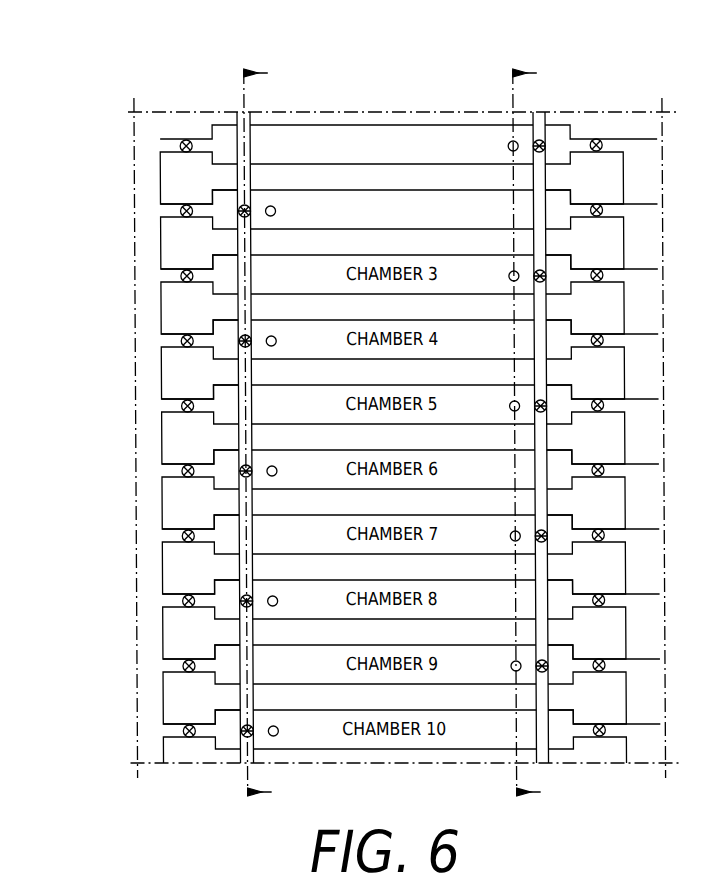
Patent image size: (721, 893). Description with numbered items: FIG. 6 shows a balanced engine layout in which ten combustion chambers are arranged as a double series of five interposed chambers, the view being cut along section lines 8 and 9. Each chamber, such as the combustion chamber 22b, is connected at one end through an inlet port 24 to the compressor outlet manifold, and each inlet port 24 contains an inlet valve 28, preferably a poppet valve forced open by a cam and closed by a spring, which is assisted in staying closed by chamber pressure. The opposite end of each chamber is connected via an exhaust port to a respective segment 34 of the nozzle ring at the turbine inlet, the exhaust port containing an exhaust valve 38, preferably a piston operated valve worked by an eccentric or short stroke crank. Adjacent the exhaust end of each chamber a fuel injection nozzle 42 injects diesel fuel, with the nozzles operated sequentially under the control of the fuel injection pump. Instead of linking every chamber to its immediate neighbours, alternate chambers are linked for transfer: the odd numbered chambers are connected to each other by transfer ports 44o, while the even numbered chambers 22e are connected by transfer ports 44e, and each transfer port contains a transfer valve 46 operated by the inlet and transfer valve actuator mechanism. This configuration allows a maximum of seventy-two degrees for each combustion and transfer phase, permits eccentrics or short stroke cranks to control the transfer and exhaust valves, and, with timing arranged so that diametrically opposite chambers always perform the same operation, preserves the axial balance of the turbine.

The combustion chamber 22b is at (442, 123).
The even numbered chamber 22e is at (443, 190).
The inlet port 24 is at (172, 275).
The inlet valve 28 is at (183, 141).
The segment of nozzle ring 34 is at (650, 242).
The exhaust valve 38 is at (595, 138).
The fuel injection nozzle 42 is at (510, 273).
The transfer port (odd chambers) 44o is at (245, 194).
The transfer port (even chambers) 44e is at (536, 284).
The transfer valve 46 is at (250, 348).
The section line 8- 8 is at (535, 433).
The section line 9- 9 is at (266, 433).